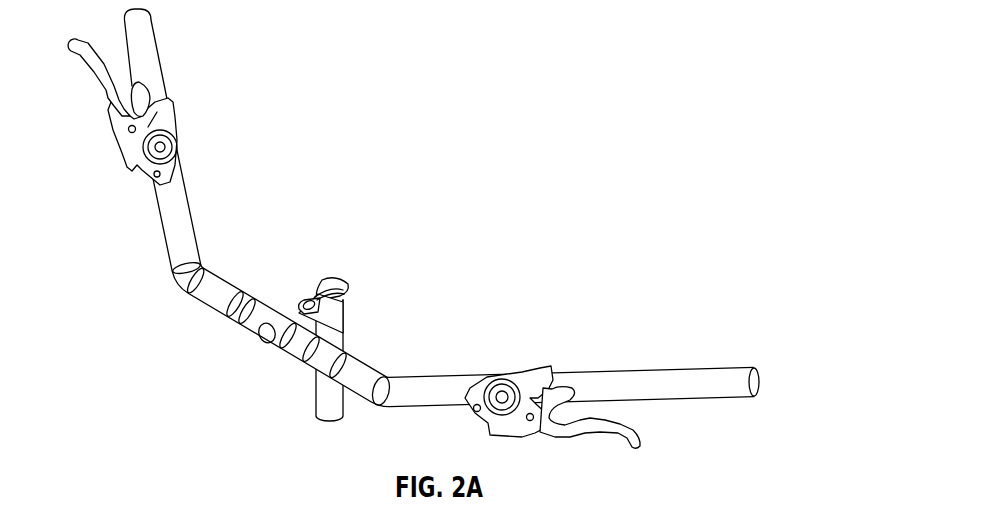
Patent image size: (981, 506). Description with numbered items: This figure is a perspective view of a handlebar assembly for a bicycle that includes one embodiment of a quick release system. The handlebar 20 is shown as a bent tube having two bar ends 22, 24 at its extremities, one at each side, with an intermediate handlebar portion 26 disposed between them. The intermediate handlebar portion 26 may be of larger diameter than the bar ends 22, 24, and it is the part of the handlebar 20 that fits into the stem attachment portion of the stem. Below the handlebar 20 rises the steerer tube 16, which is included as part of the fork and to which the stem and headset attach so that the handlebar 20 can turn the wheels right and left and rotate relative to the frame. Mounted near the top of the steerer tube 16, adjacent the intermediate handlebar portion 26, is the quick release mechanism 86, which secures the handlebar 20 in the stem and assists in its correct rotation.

The handlebar 20 is at (413, 228).
The steerer tube 16 is at (327, 392).
The bar end 22 is at (633, 385).
The bar end 24 is at (153, 80).
The intermediate handlebar portion 26 is at (240, 297).
The quick release mechanism 86 is at (339, 264).